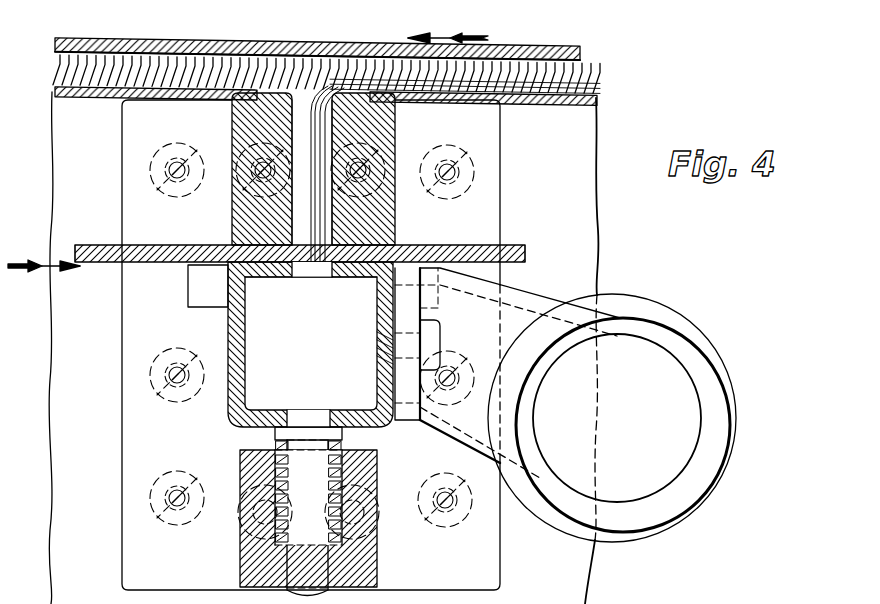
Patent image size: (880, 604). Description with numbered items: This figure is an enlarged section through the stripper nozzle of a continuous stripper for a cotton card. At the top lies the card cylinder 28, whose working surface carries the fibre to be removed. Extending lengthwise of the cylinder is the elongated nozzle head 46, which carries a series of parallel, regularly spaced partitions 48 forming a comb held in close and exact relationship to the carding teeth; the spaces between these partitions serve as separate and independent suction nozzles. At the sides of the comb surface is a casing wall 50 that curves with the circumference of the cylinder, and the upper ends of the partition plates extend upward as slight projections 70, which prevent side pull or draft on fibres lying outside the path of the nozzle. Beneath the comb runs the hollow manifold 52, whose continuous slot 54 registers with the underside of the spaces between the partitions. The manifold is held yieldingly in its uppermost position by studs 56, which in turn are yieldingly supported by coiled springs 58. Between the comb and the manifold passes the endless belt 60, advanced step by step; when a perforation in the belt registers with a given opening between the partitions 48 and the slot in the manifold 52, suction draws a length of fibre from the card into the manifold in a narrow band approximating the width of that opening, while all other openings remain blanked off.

The card cylinder 28 is at (520, 47).
The casing wall 50 is at (598, 100).
The projections 70 is at (312, 90).
The partitions 48 is at (330, 148).
The nozzle head 46 is at (396, 222).
The belt 60 is at (522, 248).
The manifold 52 is at (346, 410).
The slot 54 is at (300, 272).
The coiled springs 58 is at (342, 447).
The studs 56 is at (326, 594).